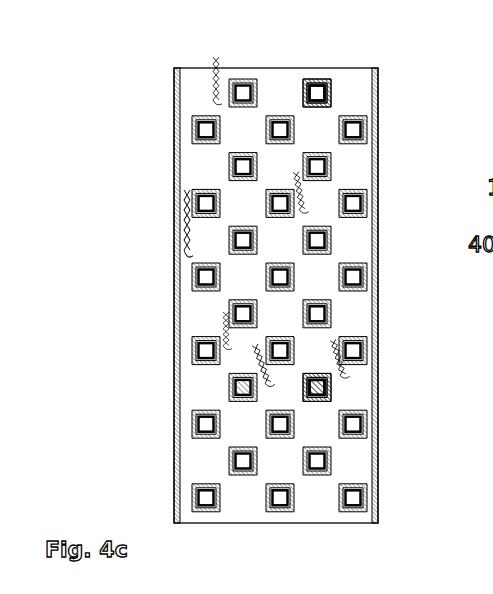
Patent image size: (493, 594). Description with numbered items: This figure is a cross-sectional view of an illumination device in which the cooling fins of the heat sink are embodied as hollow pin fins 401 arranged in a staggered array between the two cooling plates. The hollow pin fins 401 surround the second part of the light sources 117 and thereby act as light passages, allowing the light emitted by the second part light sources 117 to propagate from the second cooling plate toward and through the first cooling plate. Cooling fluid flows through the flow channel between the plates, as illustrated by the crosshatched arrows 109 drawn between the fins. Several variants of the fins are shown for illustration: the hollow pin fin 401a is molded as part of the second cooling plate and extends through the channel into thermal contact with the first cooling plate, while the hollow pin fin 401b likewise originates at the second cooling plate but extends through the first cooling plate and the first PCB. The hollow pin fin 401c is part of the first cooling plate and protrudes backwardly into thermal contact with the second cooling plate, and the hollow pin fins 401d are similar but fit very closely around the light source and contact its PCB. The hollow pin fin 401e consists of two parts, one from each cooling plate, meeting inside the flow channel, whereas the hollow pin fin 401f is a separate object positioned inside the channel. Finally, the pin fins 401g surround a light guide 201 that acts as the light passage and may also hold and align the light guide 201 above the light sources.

The hollow pin fins 401 is at (394, 70).
The second part of the light sources 117 is at (313, 92).
The hollow pin fin 401a is at (267, 122).
The hollow pin fin 401b is at (267, 265).
The hollow pin fin 401c is at (268, 190).
The hollow pin fins 401d is at (267, 341).
The hollow pin fin 401e is at (267, 435).
The hollow pin fin 401f is at (277, 505).
The pin fins 401g is at (317, 399).
The crosshatched arrows 109 is at (173, 213).
The light guides 201 is at (303, 382).